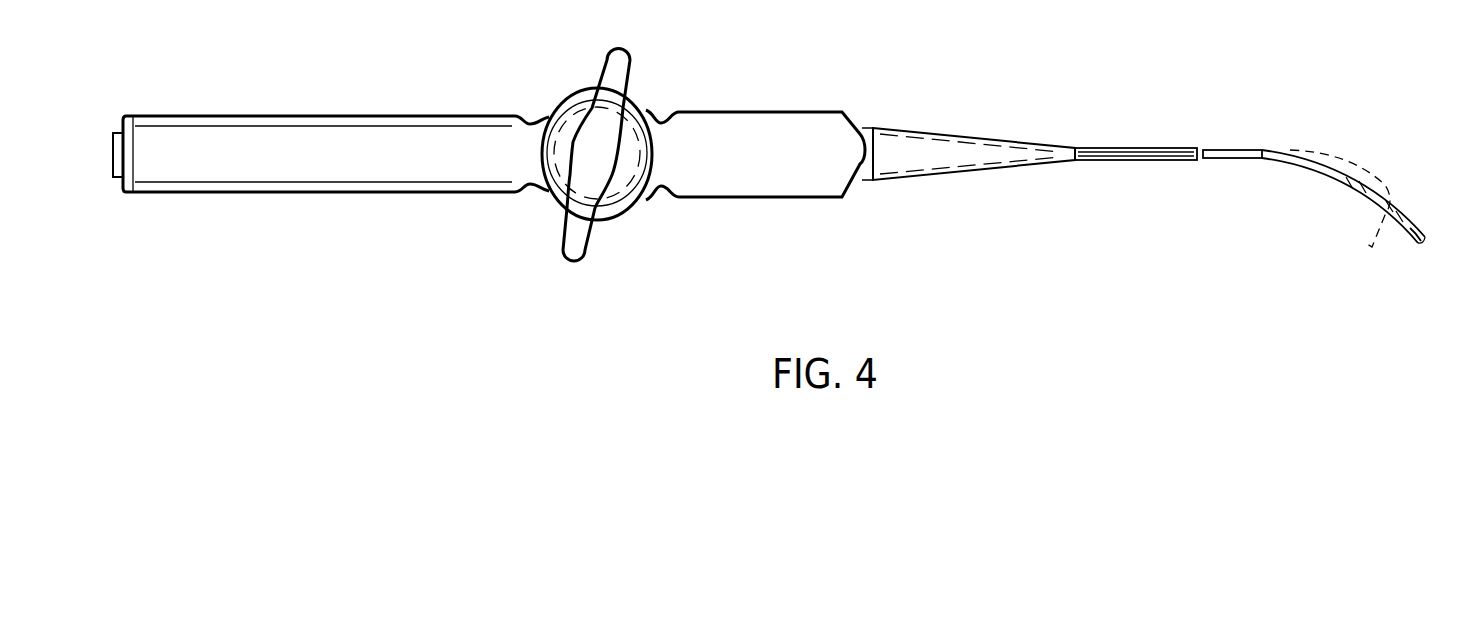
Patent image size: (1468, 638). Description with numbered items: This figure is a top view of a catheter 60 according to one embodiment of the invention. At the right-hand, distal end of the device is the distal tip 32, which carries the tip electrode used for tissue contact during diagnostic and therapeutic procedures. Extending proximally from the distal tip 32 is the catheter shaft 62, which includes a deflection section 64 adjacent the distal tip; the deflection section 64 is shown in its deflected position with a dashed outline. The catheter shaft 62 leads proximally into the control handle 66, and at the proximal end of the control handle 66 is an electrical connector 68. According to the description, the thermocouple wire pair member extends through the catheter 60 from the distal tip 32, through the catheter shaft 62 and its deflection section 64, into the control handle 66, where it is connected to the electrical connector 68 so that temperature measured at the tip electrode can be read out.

The catheter 60 is at (1155, 178).
The catheter shaft 62 is at (1137, 149).
The deflection section 64 is at (1378, 171).
The distal tip 32 is at (1420, 246).
The control handle 66 is at (311, 113).
The electrical connector 68 is at (119, 131).